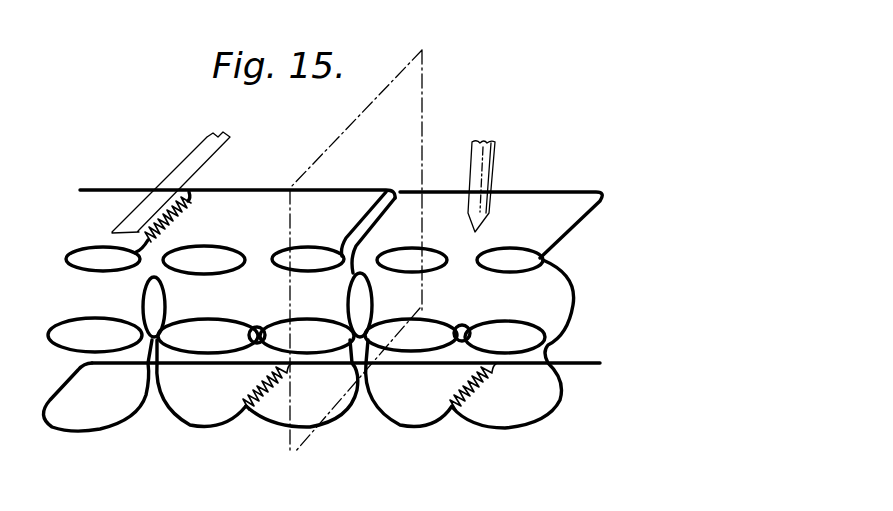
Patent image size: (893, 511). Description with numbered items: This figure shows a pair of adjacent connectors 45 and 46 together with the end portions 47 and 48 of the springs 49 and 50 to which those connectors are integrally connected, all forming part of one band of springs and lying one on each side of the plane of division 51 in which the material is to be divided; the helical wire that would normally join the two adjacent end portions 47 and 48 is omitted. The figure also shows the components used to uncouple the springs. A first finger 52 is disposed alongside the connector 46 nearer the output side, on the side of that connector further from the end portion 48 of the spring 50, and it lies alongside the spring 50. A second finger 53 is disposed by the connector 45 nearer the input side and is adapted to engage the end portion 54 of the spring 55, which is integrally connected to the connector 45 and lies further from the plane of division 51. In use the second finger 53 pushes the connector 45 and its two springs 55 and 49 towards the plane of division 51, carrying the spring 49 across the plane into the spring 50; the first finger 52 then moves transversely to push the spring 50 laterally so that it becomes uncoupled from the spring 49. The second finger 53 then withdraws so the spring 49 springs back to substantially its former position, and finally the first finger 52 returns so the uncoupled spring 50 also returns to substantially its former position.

The connector 45 is at (243, 188).
The connector 46 is at (537, 188).
The end portion 47 is at (370, 222).
The end portion 48 is at (364, 220).
The spring 49 is at (272, 247).
The spring 50 is at (447, 263).
The plane of division 51 is at (422, 100).
The first finger 52 is at (497, 153).
The second finger 53 is at (194, 150).
The end portion 54 is at (140, 240).
The spring 55 is at (241, 272).